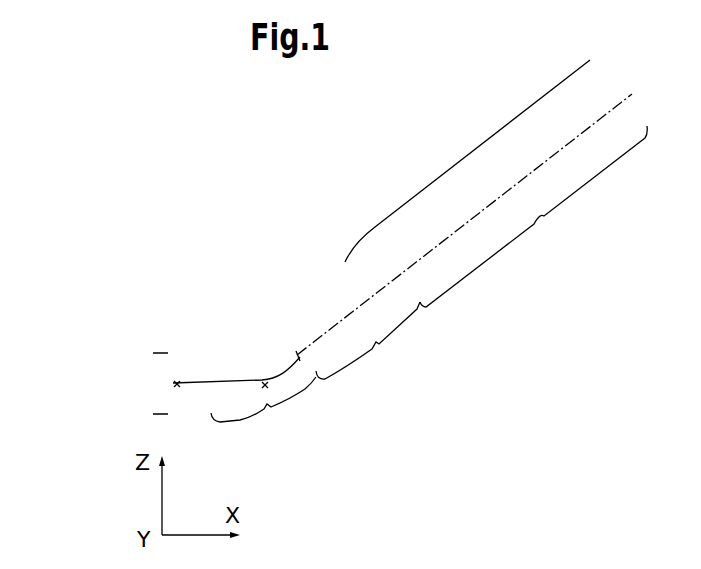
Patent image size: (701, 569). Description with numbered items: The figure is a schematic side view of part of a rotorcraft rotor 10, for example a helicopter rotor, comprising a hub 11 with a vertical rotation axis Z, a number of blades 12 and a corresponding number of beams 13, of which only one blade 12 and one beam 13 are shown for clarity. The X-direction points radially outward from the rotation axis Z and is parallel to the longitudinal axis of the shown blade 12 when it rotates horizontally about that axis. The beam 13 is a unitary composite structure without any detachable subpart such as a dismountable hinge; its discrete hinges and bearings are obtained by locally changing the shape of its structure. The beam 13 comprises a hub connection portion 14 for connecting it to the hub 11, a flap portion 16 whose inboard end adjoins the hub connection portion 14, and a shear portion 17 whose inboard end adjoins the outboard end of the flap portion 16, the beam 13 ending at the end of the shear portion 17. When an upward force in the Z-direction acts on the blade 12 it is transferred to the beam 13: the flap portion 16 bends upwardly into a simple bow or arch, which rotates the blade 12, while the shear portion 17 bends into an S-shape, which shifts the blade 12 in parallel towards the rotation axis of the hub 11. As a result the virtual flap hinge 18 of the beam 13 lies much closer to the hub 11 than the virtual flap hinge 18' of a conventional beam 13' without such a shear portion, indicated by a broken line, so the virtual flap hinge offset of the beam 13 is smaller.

The rotor 10 is at (188, 172).
The hub 11 is at (143, 387).
The blade 12 is at (533, 216).
The beam 13 is at (467, 161).
The conventional beam 13' is at (464, 224).
The hub connection portion 14 is at (198, 397).
The flap portion 16 is at (263, 412).
The shear portion 17 is at (368, 342).
The virtual flap hinge 18 is at (166, 348).
The virtual flap hinge of conventional beam 18' is at (243, 335).